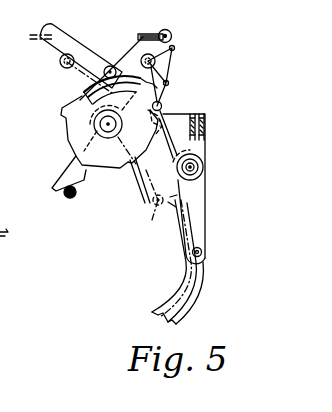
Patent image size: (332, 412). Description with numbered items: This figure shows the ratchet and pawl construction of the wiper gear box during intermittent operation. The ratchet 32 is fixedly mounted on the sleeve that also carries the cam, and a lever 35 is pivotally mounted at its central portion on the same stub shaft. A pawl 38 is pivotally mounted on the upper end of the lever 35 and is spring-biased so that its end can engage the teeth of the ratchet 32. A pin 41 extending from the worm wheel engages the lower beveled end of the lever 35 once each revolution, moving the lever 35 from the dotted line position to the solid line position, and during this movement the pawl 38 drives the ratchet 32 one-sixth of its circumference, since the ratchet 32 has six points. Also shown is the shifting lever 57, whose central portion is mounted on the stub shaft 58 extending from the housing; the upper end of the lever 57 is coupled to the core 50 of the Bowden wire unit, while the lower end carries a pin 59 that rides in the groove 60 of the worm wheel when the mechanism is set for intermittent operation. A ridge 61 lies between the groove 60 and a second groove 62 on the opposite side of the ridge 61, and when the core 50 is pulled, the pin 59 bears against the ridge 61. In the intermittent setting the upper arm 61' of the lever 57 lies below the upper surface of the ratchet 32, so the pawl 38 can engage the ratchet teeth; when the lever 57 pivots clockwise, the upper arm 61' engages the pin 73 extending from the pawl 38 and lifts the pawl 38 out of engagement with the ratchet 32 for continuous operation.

The ratchet 32 is at (63, 110).
The lever 35 is at (65, 80).
The pawl 38 is at (110, 66).
The upper arm of lever 57 61' is at (111, 58).
The pin 73 is at (162, 106).
The lever 57 is at (201, 153).
The stub shaft 58 is at (203, 170).
The pin 41 is at (65, 198).
The core 50 is at (8, 236).
The pin 59 is at (204, 249).
The groove 60 is at (197, 283).
The ridge 61 is at (204, 258).
The groove 62 is at (180, 273).